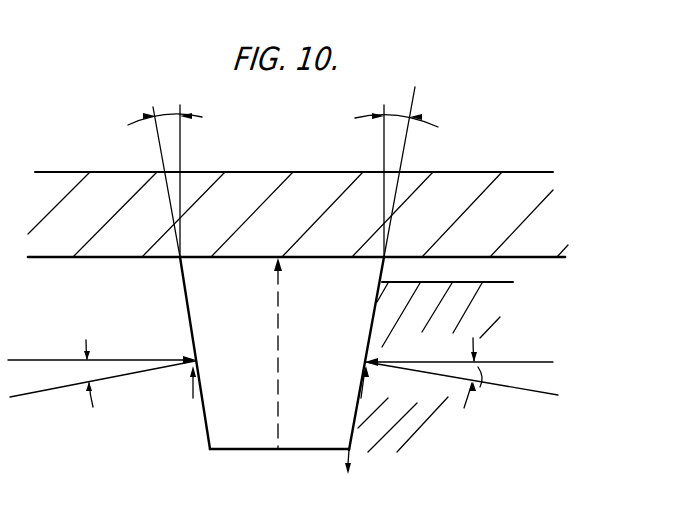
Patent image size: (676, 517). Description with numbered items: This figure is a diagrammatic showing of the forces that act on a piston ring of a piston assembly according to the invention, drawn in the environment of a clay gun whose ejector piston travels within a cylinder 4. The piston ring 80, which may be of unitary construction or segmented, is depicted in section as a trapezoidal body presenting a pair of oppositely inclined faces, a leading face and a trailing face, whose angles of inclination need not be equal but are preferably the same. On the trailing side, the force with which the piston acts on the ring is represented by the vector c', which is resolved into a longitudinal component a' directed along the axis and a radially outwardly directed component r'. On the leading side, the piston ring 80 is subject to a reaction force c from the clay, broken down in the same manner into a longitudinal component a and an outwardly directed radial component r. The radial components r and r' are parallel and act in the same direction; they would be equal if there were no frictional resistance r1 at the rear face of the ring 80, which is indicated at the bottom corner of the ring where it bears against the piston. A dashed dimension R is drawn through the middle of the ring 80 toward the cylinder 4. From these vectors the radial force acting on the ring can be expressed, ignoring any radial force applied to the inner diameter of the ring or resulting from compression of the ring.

The cylinder 4 is at (473, 185).
The piston ring 80 is at (331, 369).
The groove depth R is at (285, 353).
The longitudinal component a is at (102, 348).
The reaction force c is at (102, 379).
The radial component r is at (187, 383).
The longitudinal component a' is at (459, 350).
The force vector c' is at (462, 379).
The radial component r' is at (372, 382).
The frictional resistance r1 is at (358, 465).